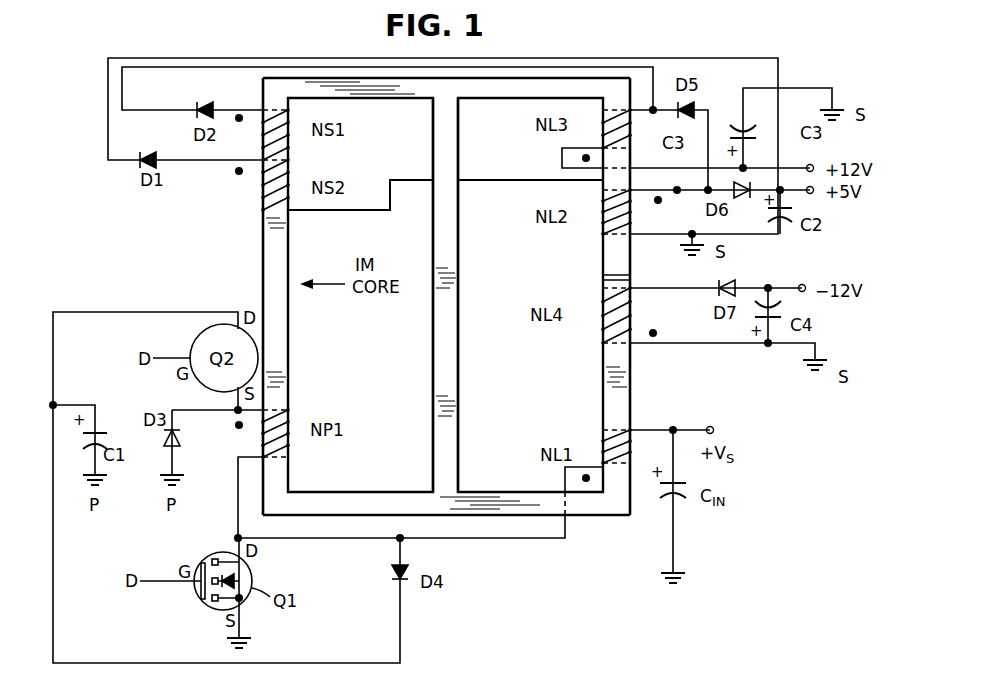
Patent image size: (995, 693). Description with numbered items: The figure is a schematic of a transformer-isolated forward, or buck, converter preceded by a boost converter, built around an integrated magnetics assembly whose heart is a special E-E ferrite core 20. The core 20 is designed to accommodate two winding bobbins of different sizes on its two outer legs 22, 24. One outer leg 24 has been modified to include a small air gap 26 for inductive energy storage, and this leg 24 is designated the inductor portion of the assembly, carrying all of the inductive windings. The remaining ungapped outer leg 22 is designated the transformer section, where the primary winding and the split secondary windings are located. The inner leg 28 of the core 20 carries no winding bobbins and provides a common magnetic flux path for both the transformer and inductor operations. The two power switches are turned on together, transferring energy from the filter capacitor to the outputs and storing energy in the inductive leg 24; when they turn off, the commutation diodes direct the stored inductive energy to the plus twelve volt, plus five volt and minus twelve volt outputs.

The E-E ferrite core 20 is at (449, 325).
The ungapped outer leg 22 is at (270, 250).
The gapped outer leg 24 is at (628, 390).
The air gap 26 is at (600, 275).
The inner leg 28 is at (450, 374).